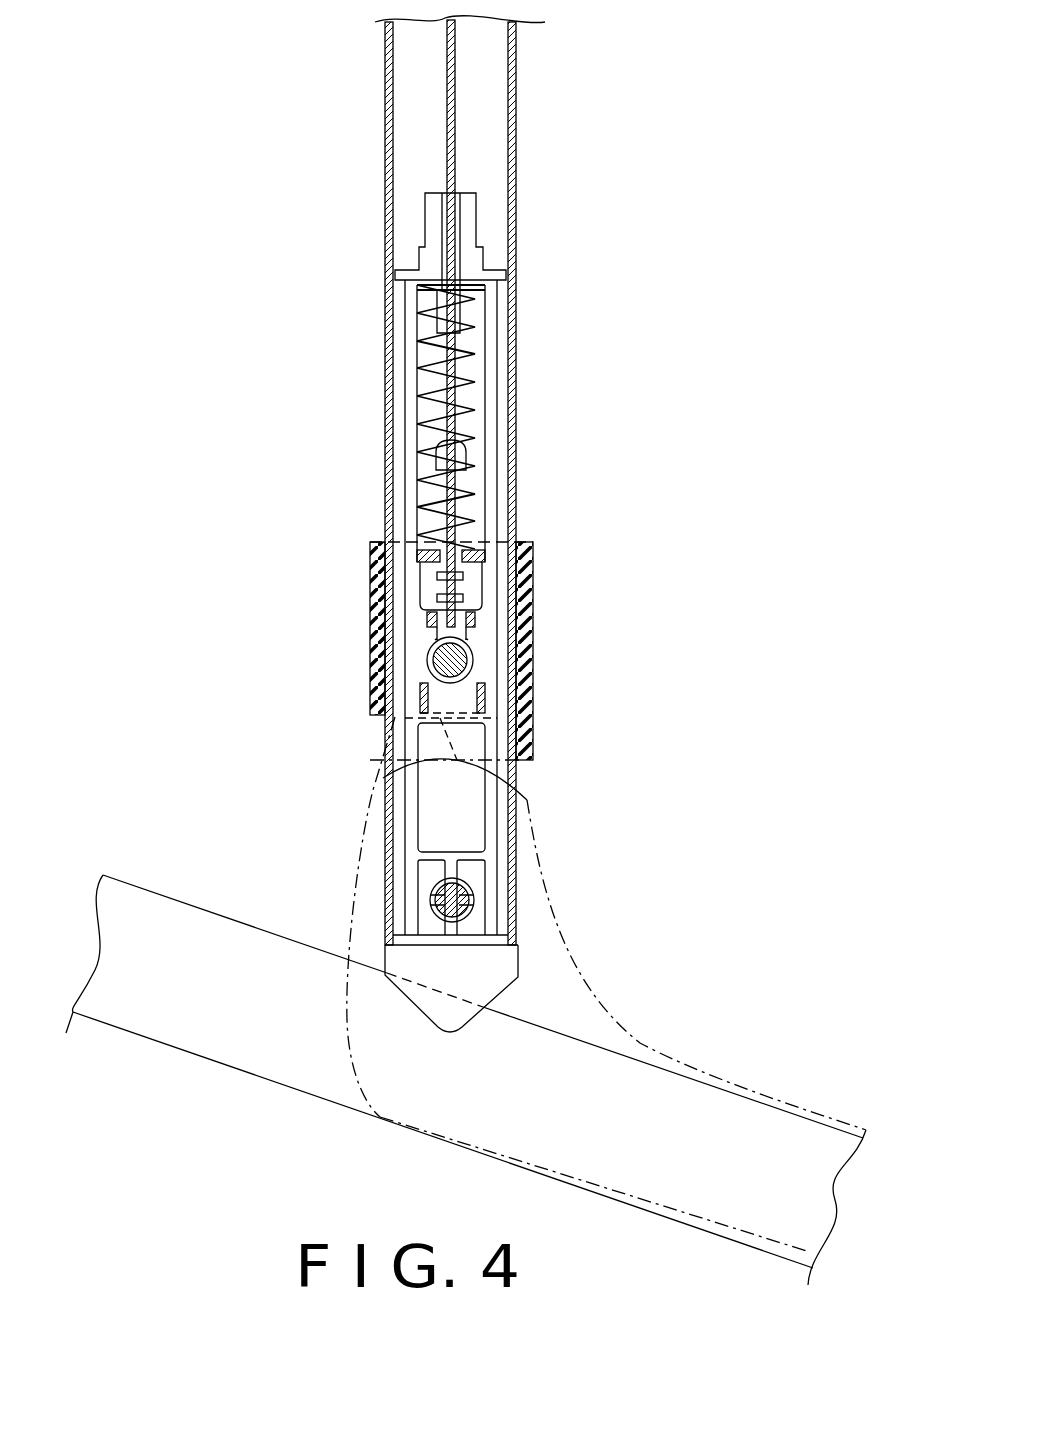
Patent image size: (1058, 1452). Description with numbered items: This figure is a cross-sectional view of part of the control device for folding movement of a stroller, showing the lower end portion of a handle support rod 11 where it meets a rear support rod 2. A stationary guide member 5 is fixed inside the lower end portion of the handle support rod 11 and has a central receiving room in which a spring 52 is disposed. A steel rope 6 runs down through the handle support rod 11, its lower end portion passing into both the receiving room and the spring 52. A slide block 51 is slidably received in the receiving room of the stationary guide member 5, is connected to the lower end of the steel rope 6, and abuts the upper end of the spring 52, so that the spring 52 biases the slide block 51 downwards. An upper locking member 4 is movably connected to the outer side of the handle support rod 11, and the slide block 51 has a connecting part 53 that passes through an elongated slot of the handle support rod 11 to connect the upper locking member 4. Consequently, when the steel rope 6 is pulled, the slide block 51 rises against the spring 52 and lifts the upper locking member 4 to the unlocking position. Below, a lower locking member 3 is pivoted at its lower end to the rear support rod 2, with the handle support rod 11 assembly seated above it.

The rear support rod 2 is at (203, 1032).
The lower locking member 3 is at (562, 1013).
The upper locking member 4 is at (532, 650).
The stationary guide member 5 is at (495, 463).
The steel rope 6 is at (453, 155).
The handle support rod 11 is at (385, 140).
The slide block 51 is at (430, 585).
The spring 52 is at (437, 378).
The connecting part 53 is at (437, 670).